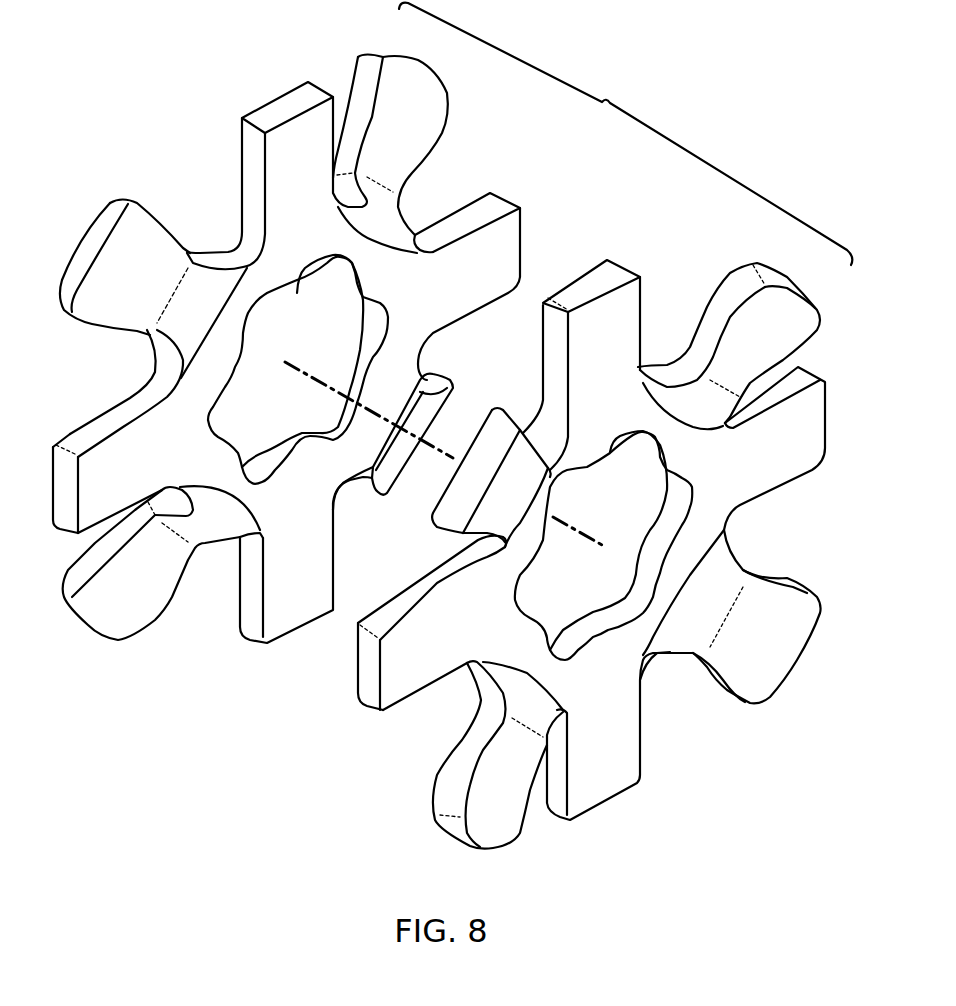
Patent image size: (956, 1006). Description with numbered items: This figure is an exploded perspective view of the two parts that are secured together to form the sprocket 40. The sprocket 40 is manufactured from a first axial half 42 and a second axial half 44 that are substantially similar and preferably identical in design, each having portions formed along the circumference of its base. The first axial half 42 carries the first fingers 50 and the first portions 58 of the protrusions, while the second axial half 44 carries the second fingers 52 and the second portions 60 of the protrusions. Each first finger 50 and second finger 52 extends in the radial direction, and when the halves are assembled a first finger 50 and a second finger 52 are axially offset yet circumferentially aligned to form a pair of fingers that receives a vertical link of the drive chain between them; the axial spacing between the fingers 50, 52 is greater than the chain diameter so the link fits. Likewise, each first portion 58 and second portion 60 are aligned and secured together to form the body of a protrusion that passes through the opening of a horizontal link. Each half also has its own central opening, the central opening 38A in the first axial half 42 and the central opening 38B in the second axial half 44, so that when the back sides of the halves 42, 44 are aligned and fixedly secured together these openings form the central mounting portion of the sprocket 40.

The central opening 38A is at (620, 467).
The central opening 38B is at (297, 283).
The sprocket 40 is at (625, 134).
The first axial half 42 is at (682, 245).
The second axial half 44 is at (492, 125).
The first finger 50 is at (790, 287).
The second finger 52 is at (92, 238).
The first portion 58 is at (613, 300).
The second portion 60 is at (282, 107).